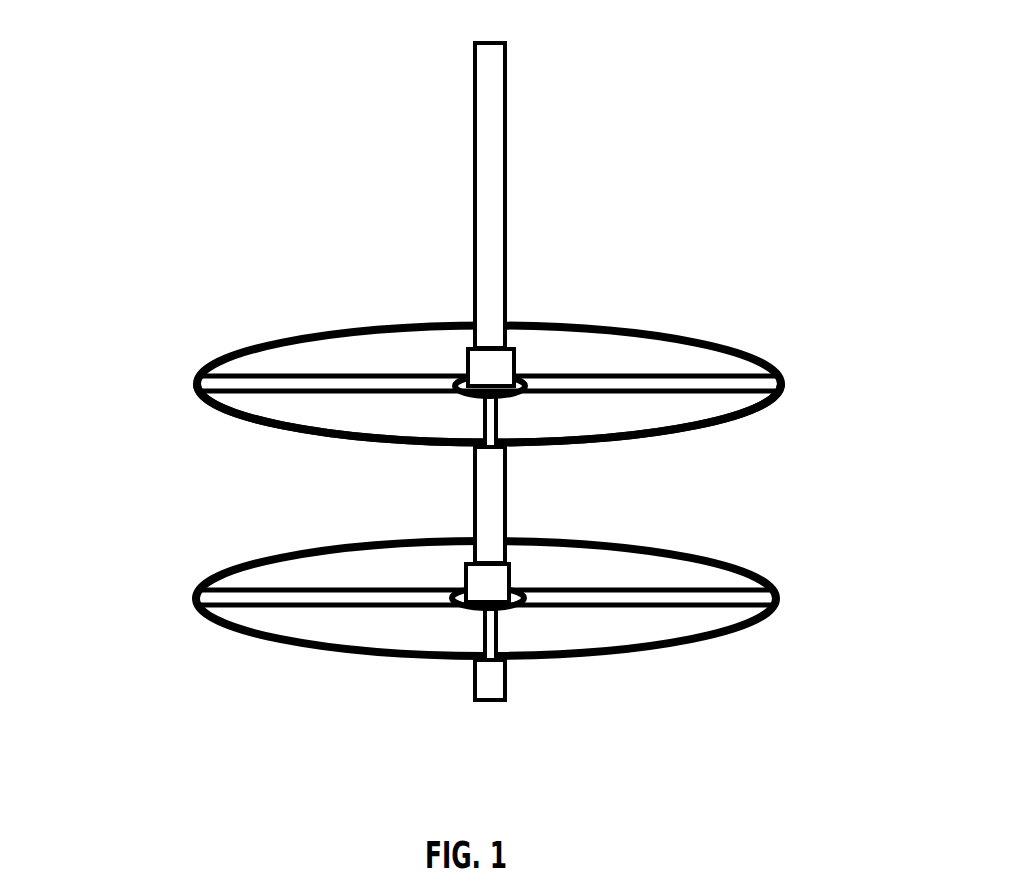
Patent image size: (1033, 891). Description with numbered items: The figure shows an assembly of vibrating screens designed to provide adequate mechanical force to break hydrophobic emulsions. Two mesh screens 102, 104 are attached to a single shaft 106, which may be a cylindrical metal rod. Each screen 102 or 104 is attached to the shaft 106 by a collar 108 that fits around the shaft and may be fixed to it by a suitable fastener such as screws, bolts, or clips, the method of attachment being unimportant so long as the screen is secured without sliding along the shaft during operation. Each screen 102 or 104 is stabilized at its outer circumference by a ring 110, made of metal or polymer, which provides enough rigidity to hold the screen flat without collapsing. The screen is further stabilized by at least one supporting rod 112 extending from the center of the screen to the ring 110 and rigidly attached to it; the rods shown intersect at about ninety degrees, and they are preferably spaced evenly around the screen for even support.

The mesh screen 102 is at (408, 362).
The mesh screen 104 is at (598, 635).
The shaft 106 is at (507, 138).
The collar 108 is at (517, 363).
The ring 110 is at (207, 412).
The supporting rod 112 is at (613, 387).